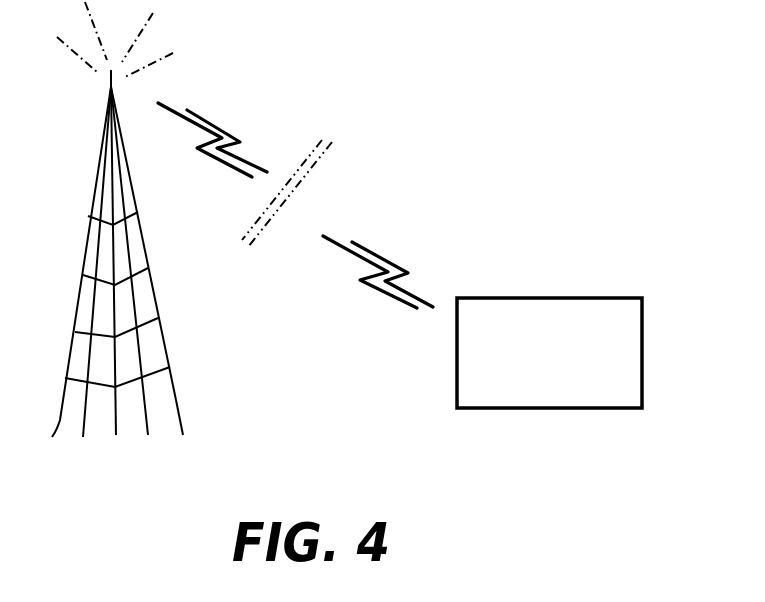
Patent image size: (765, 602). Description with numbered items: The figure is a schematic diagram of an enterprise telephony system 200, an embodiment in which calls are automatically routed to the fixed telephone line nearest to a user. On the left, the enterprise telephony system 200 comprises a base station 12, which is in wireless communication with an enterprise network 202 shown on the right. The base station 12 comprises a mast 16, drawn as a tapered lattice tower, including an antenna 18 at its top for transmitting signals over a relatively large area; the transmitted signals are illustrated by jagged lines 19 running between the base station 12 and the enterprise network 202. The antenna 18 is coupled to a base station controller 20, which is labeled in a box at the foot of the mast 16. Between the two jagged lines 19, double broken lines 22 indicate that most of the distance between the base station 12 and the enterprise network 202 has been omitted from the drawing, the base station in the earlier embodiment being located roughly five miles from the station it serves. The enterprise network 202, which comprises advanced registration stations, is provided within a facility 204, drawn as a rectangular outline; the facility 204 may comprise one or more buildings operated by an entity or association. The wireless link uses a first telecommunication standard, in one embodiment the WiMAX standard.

The base station 12 is at (116, 475).
The mast 16 is at (128, 157).
The antenna 18 is at (109, 80).
The jagged lines 19 is at (210, 118).
The base station controller 20 is at (167, 416).
The double broken lines 22 is at (335, 150).
The enterprise telephony system 200 is at (612, 170).
The enterprise network 202 is at (547, 452).
The facility 204 is at (648, 385).